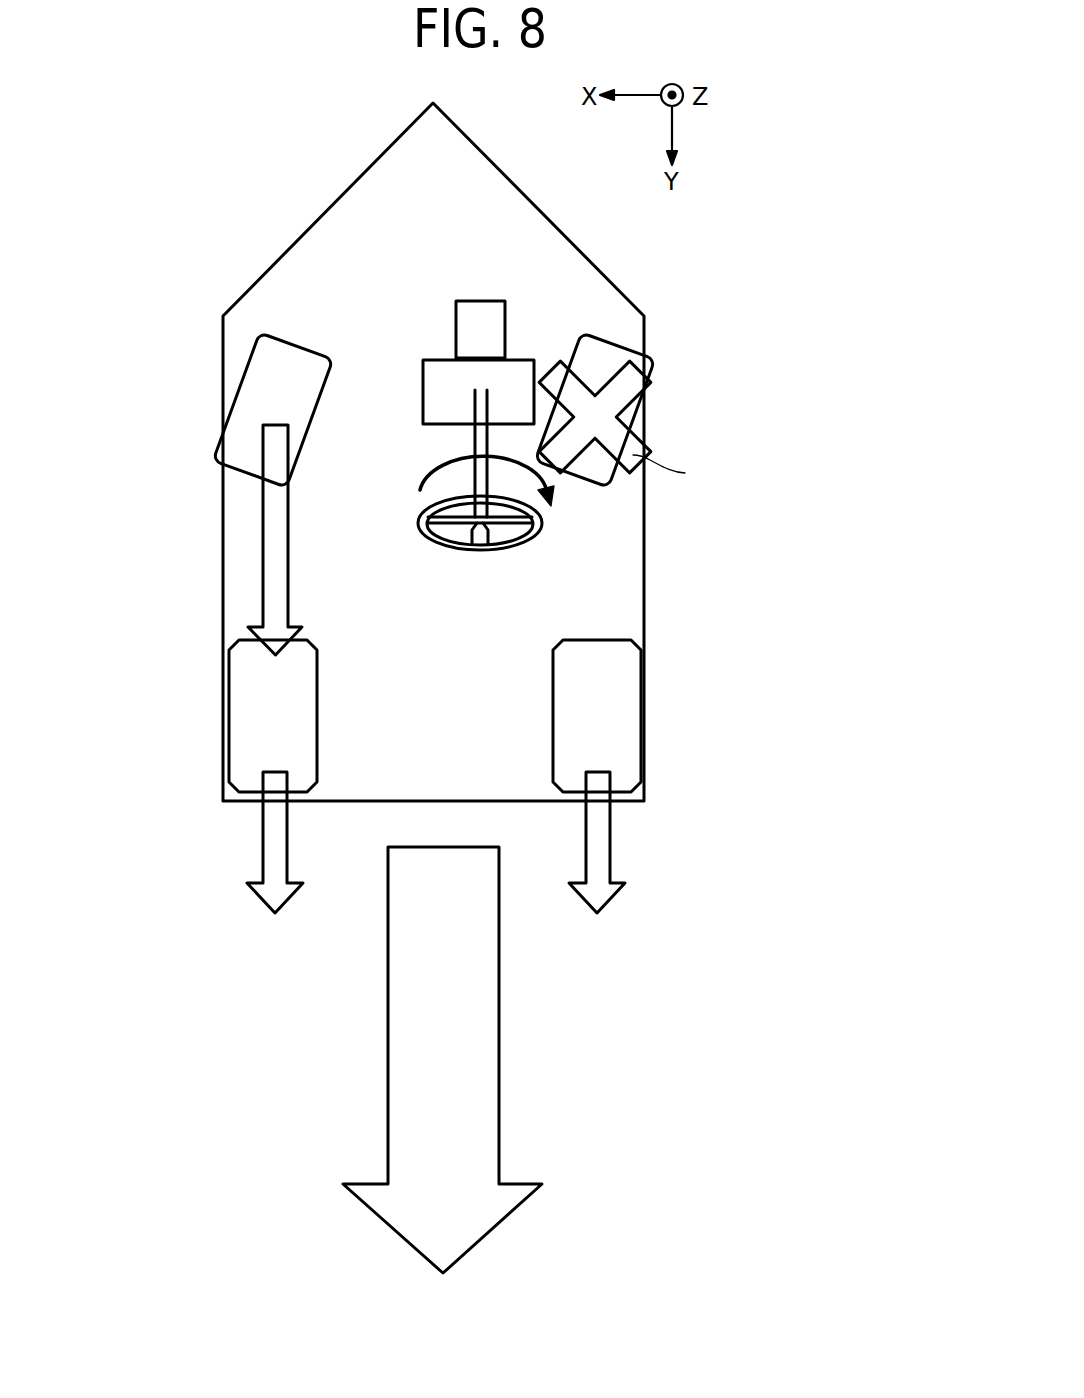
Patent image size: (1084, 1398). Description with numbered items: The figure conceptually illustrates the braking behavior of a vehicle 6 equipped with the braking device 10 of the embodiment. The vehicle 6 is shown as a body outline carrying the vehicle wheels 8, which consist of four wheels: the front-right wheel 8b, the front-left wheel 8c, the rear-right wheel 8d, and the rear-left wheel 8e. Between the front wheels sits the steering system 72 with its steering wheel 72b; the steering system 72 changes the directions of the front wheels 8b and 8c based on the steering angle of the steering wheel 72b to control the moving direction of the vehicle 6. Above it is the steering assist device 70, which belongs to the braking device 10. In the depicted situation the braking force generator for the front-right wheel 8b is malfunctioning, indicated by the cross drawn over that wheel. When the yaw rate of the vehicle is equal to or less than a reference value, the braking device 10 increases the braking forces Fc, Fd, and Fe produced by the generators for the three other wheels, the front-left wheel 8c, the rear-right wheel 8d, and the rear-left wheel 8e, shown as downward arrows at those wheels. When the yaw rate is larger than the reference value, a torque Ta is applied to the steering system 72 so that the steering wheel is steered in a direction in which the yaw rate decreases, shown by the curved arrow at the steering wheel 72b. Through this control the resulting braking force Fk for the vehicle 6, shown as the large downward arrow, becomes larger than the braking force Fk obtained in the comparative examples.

The vehicle 6 is at (306, 255).
The vehicle wheels 8 is at (204, 438).
The front-right wheel 8b is at (632, 418).
The front-left wheel 8c is at (255, 388).
The rear-right wheel 8d is at (628, 712).
The rear-left wheel 8e is at (245, 680).
The braking device 10 is at (594, 306).
The steering assist device 70 is at (470, 330).
The steering system 72 is at (435, 388).
The steering wheel 72b is at (477, 551).
The torque Ta is at (430, 472).
The braking force Fc is at (272, 517).
The braking force Fd is at (596, 813).
The braking force Fe is at (266, 815).
The braking force for the vehicle Fk is at (396, 940).